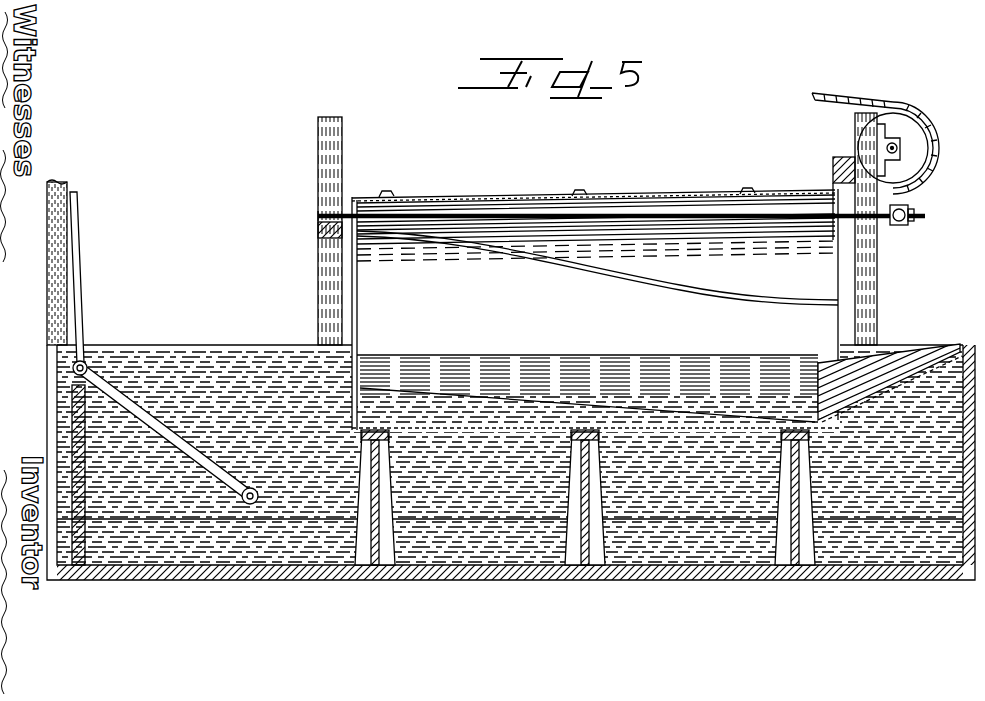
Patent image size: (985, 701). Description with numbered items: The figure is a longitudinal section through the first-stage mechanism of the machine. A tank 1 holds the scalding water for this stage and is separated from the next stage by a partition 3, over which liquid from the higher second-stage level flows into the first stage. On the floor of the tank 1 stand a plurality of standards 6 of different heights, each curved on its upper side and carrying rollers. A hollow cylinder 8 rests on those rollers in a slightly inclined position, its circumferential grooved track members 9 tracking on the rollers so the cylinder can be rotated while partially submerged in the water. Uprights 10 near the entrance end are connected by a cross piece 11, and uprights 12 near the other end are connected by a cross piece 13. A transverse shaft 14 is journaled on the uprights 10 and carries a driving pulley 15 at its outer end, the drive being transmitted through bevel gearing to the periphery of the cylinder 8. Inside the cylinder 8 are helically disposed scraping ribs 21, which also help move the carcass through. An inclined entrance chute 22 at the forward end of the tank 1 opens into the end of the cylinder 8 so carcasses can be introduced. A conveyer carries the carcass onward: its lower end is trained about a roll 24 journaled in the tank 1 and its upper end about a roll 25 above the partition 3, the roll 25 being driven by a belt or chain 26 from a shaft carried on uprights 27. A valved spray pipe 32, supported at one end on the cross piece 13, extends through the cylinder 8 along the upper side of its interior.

The tank 1 is at (511, 478).
The partition 3 is at (72, 410).
The standards 6 is at (378, 545).
The hollow cylinder 8 is at (596, 309).
The track members 9 is at (372, 196).
The uprights 10 is at (878, 291).
The cross piece 11 is at (833, 165).
The uprights 12 is at (334, 171).
The cross piece 13 is at (318, 233).
The transverse shaft 14 is at (893, 142).
The driving pulley 15 is at (907, 138).
The scraping ribs 21 is at (657, 270).
The entrance chute 22 is at (908, 368).
The roll 24 is at (243, 505).
The roll 25 is at (87, 362).
The belt or chain 26 is at (84, 285).
The uprights 27 is at (67, 197).
The valved spray pipe 32 is at (641, 212).